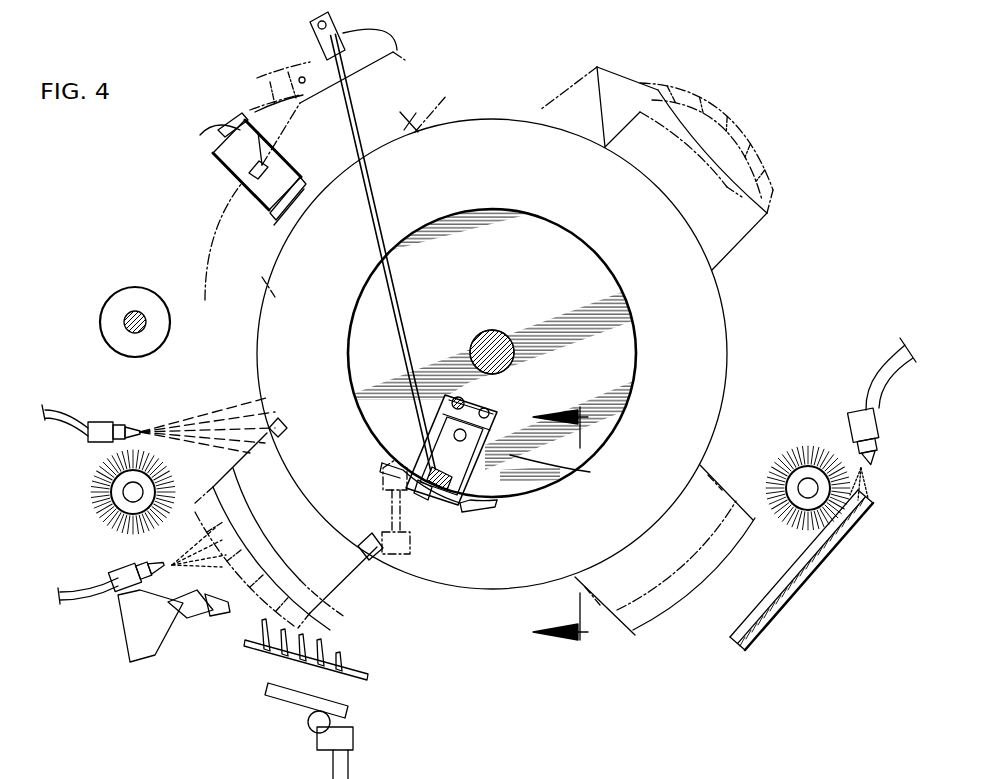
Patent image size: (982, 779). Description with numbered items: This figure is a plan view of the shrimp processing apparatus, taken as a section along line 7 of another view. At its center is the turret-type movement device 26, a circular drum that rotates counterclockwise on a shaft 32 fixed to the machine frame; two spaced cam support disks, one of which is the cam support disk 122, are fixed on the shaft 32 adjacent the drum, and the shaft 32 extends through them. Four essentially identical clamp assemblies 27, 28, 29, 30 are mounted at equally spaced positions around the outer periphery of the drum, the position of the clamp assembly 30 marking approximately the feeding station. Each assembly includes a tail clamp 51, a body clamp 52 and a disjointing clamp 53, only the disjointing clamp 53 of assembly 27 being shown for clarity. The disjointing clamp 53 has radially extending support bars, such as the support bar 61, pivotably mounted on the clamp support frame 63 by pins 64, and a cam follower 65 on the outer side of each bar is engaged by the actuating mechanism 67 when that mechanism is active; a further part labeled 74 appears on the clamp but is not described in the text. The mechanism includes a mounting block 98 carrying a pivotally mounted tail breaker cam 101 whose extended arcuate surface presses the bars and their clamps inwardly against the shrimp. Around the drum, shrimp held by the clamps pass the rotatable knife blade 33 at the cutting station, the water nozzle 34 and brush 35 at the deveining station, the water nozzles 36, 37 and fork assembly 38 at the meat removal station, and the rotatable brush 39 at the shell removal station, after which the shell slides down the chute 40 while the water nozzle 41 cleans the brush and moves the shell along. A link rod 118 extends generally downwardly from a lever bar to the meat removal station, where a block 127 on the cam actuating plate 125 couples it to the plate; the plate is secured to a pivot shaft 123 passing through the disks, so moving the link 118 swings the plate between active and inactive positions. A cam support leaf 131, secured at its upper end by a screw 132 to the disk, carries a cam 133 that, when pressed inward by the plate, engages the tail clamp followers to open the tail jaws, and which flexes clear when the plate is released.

The section line 7 is at (566, 521).
The turret-type movement device 26 is at (745, 300).
The clamp assembly 27 is at (207, 192).
The clamp assembly 28 is at (293, 408).
The clamp assembly 29 is at (617, 636).
The clamp assembly 30 is at (678, 65).
The shaft 32 is at (506, 343).
The rotatable knife blade 33 is at (105, 305).
The water nozzle 34 is at (98, 426).
The brush 35 is at (95, 495).
The water nozzle 36 is at (135, 562).
The water nozzle 37 is at (197, 620).
The fork assembly 38 is at (362, 689).
The rotatable brush 39 is at (805, 450).
The chute 40 is at (785, 625).
The water nozzle 41 is at (872, 405).
The tail clamp 51 is at (213, 290).
The body clamp 52 is at (300, 78).
The disjointing clamp 53 is at (212, 151).
The support bar 61 is at (283, 168).
The clamp support frame 63 is at (442, 100).
The pin 64 is at (286, 228).
The cam follower 65 is at (257, 132).
The actuating mechanism 67 is at (446, 73).
The cap plate 74 is at (226, 127).
The mounting block 98 is at (340, 17).
The tail breaker cam 101 is at (380, 42).
The link rod 118 is at (375, 193).
The cam support disk 122 is at (494, 268).
The pivot shaft 123 is at (470, 437).
The cam actuating plate 125 is at (565, 470).
The block 127 is at (470, 500).
The cam support leaf 131 is at (428, 478).
The screw 132 is at (455, 398).
The cam 133 is at (448, 497).